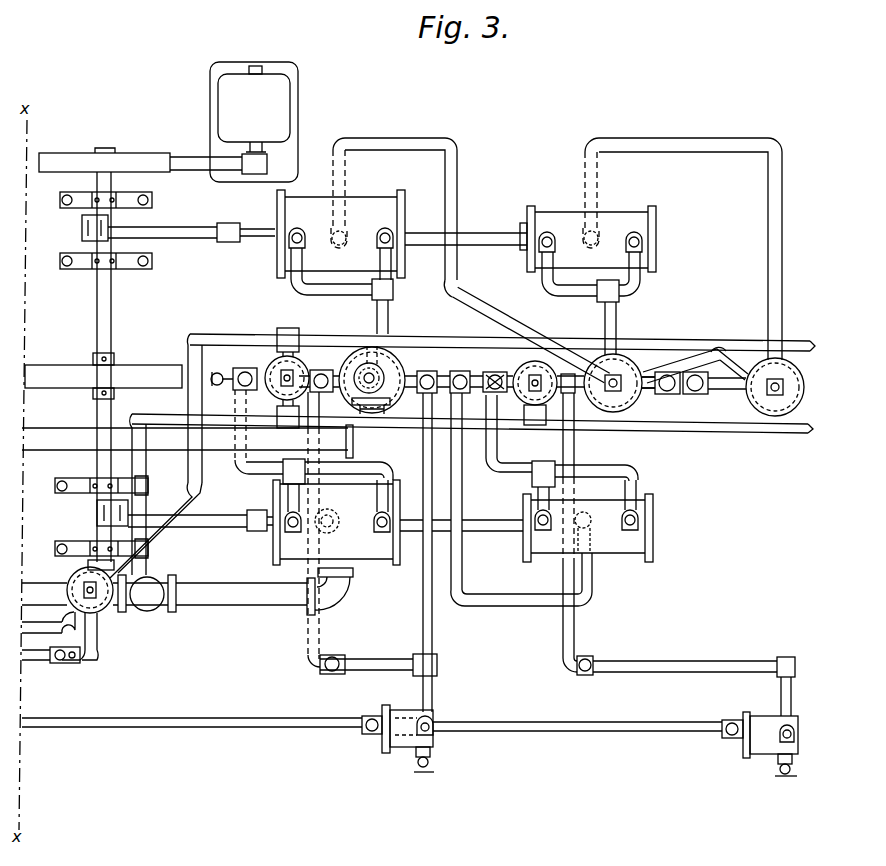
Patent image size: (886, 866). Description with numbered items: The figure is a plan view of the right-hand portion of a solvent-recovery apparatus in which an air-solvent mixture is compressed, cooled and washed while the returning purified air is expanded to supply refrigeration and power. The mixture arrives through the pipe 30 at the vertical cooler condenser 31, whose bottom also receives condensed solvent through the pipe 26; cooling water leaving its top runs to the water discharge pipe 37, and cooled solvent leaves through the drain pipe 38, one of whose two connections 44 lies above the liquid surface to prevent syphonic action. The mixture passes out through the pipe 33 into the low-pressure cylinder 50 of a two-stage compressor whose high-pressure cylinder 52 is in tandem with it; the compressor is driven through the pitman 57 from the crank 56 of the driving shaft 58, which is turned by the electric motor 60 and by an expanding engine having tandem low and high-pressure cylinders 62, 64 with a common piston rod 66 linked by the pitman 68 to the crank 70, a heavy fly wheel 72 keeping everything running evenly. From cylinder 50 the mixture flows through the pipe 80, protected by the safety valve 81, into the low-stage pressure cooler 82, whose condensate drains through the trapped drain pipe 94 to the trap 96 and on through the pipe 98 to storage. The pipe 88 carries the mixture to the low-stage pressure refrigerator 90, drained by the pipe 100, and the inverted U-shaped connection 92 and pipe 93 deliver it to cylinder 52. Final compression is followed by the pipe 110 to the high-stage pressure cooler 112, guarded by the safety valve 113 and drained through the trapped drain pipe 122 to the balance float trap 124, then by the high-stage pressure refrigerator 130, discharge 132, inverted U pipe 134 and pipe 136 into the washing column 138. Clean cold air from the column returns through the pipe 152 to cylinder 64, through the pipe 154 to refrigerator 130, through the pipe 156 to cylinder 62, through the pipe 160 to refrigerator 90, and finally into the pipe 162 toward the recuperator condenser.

The pipe 26 is at (40, 640).
The pipe 30 is at (40, 590).
The cooler condenser 31 is at (105, 614).
The pipe 33 is at (228, 605).
The water discharge pipe 37 is at (166, 416).
The drain pipe 38 is at (75, 663).
The connection 44 is at (98, 641).
The low-pressure cylinder 50 is at (381, 560).
The high-pressure cylinder 52 is at (620, 553).
The crank 56 is at (97, 511).
The pitman 57 is at (212, 520).
The driving shaft 58 is at (105, 336).
The electric motor 60 is at (235, 107).
The low-pressure cylinder 62 is at (368, 197).
The high-pressure cylinder 64 is at (557, 215).
The piston rod 66 is at (252, 242).
The pitman 68 is at (178, 238).
The crank 70 is at (82, 229).
The fly wheel 72 is at (58, 366).
The pipe 80 is at (268, 476).
The safety valve 81 is at (235, 370).
The low-stage pressure cooler 82 is at (280, 355).
The pipe 88 is at (322, 370).
The low-stage pressure refrigerator 90 is at (398, 368).
The inverted U-shaped connection 92 is at (447, 388).
The pipe 93 is at (462, 572).
The trapped drain pipe 94 is at (312, 630).
The trap 96 is at (405, 742).
The pipe 98 is at (228, 727).
The pipe 100 is at (425, 618).
The pipe 110 is at (498, 455).
The high-stage pressure cooler 112 is at (480, 390).
The safety valve 113 is at (482, 348).
The trapped drain pipe 122 is at (575, 655).
The balance float trap 124 is at (763, 716).
The high-stage pressure refrigerator 130 is at (623, 367).
The discharge 132 is at (648, 393).
The inverted U pipe 134 is at (678, 392).
The pipe 136 is at (730, 390).
The washing column 138 is at (762, 416).
The pipe 152 is at (693, 150).
The pipe 154 is at (614, 328).
The pipe 156 is at (455, 197).
The pipe 160 is at (388, 330).
The pipe 162 is at (221, 450).